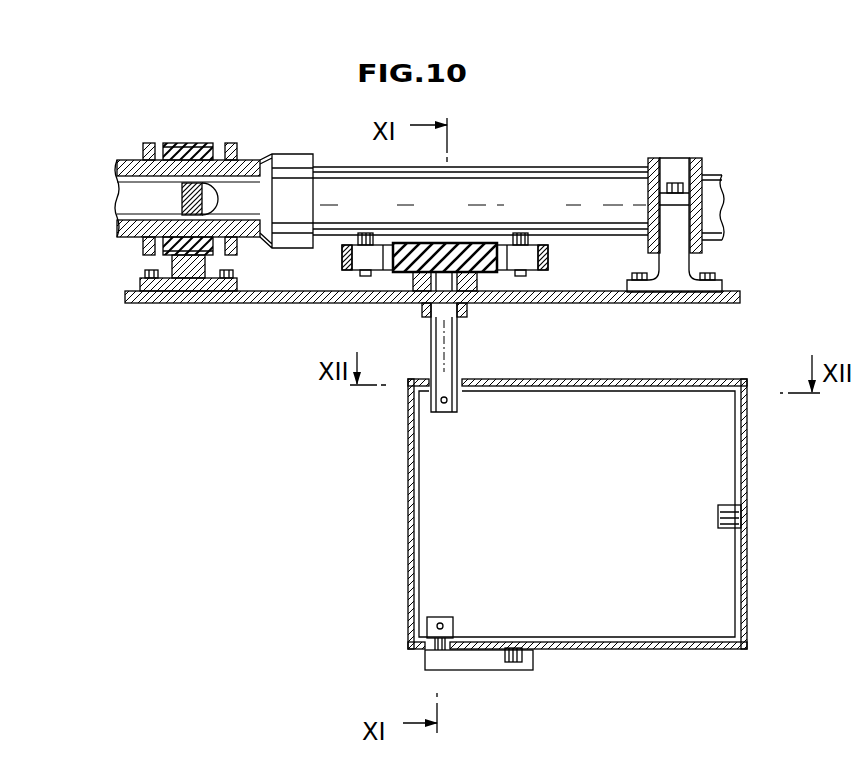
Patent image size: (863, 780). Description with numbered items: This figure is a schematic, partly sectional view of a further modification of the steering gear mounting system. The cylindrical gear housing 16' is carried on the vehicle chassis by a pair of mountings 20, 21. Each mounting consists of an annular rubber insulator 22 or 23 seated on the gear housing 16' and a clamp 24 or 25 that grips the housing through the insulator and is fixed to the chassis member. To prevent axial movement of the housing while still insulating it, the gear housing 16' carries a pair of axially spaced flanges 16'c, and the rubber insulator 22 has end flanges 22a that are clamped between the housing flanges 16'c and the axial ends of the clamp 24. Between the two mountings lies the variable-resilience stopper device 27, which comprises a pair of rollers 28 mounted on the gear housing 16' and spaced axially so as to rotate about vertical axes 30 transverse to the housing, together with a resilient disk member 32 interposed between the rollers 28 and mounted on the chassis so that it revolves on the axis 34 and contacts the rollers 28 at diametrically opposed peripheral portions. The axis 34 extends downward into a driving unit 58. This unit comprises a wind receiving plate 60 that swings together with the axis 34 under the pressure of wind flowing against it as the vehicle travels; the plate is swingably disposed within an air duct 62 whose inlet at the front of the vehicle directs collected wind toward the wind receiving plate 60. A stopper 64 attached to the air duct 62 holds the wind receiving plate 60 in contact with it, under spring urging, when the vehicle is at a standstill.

The gear housing 16' is at (171, 164).
The gear housing flanges 16'c is at (218, 172).
The mounting 20 is at (138, 128).
The annular rubber insulator 22 is at (213, 138).
The insulator flanges 22a is at (167, 143).
The clamp 24 is at (190, 288).
The clamp 25 is at (678, 290).
The variable-resilience stopper device 27 is at (475, 228).
The rollers 28 is at (342, 252).
The axes 30 is at (372, 233).
The resilient disk member 32 is at (440, 243).
The axis 34 is at (454, 346).
The annular rubber insulator 23 is at (655, 155).
The mounting 21 is at (683, 150).
The driving unit 58 is at (397, 423).
The wind receiving plate 60 is at (718, 448).
The air duct 62 is at (648, 650).
The stopper 64 is at (742, 518).